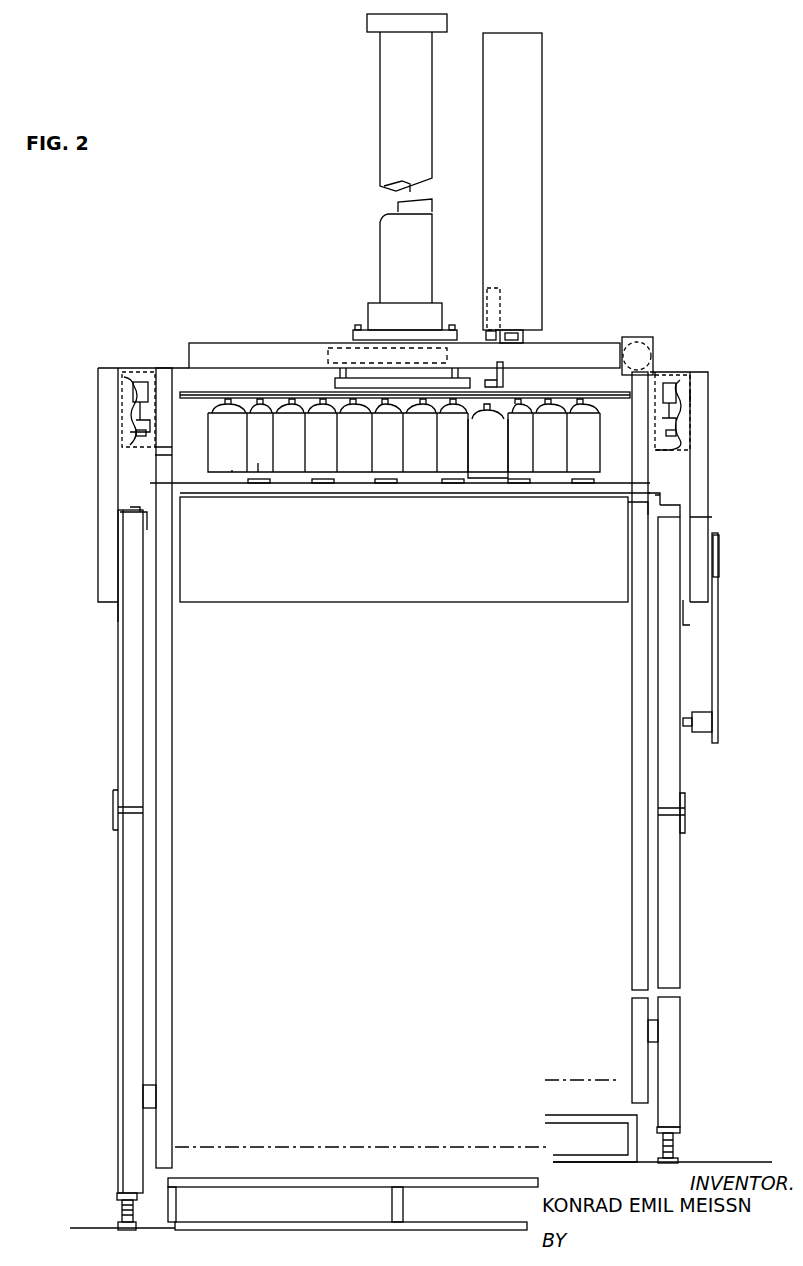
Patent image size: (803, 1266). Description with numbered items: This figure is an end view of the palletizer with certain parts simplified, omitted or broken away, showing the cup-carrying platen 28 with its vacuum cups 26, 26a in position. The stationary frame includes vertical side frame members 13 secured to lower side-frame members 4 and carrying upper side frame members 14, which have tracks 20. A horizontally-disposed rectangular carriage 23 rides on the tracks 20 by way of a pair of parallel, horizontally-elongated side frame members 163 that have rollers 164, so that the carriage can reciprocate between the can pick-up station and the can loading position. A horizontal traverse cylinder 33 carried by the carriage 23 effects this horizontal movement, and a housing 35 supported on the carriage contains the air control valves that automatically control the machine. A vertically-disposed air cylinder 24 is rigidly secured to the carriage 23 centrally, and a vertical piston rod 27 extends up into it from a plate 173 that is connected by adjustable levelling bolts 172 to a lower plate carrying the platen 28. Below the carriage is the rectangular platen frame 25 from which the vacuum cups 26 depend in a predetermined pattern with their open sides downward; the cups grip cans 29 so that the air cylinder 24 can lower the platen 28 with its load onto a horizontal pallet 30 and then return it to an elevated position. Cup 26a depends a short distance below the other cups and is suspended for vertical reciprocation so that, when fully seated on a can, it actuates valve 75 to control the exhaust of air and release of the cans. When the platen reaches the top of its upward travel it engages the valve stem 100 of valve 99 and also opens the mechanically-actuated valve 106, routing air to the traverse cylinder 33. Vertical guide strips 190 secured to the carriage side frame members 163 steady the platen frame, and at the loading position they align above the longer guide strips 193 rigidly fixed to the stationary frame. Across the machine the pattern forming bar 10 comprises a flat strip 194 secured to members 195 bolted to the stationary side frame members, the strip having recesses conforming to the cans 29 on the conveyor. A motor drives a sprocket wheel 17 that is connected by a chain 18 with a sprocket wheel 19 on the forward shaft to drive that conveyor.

The lower side-frame members 4 is at (683, 538).
The pattern forming bar 10 is at (290, 501).
The vertical side frame members 13 is at (708, 506).
The upper side frame members 14 is at (700, 398).
The sprocket wheel 17 is at (718, 716).
The chain 18 is at (718, 624).
The sprocket wheel 19 is at (719, 566).
The tracks 20 is at (140, 418).
The carriage 23 is at (594, 336).
The air cylinder 24 is at (380, 130).
The platen frame 25 is at (548, 392).
The vacuum cups 26 is at (322, 414).
The vacuum cup 26a is at (490, 414).
The piston rod 27 is at (398, 205).
The platen 28 is at (568, 392).
The cans 29 is at (258, 463).
The pallet 30 is at (352, 1178).
The traverse cylinder 33 is at (655, 343).
The housing 35 is at (540, 219).
The valve 75 is at (510, 377).
The valve 99 is at (497, 296).
The valve stem 100 is at (486, 336).
The mechanically-actuated valve 106 is at (505, 312).
The side frame members 163 is at (660, 372).
The rollers 164 is at (131, 370).
The levelling bolts 172 is at (330, 348).
The plate 173 is at (418, 330).
The guide strips 190 is at (165, 445).
The guide strips 193 is at (172, 651).
The flat strip 194 is at (560, 490).
The members 195 is at (650, 506).